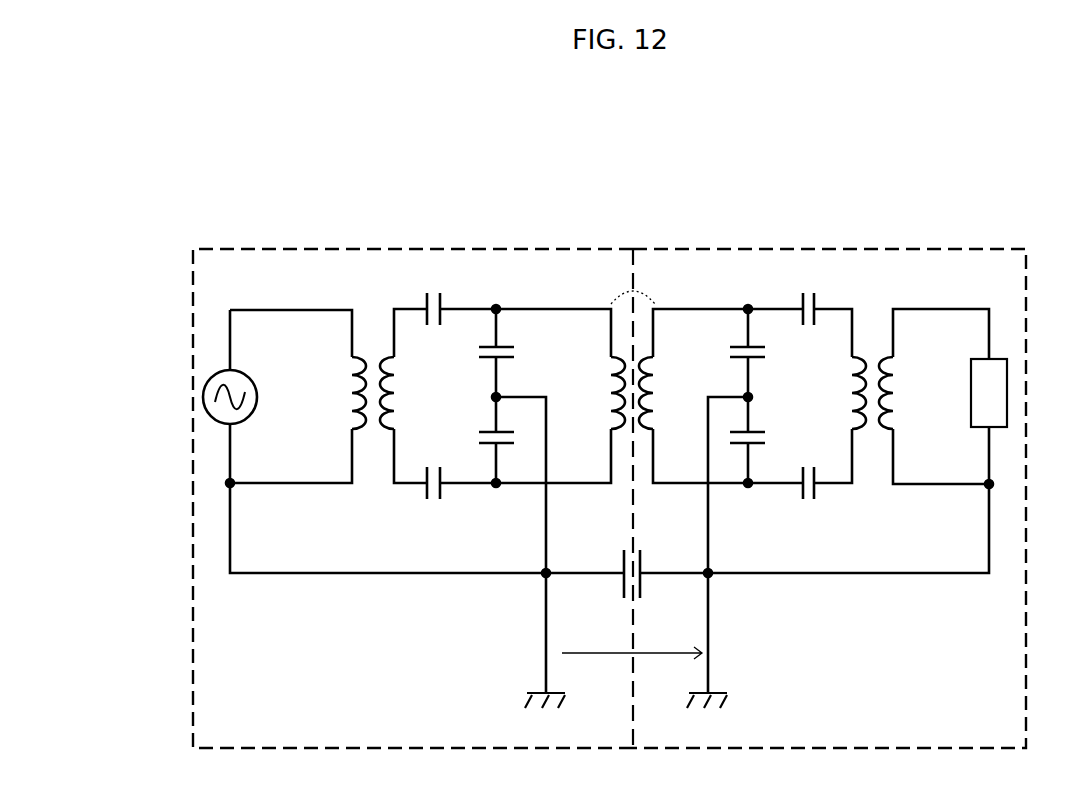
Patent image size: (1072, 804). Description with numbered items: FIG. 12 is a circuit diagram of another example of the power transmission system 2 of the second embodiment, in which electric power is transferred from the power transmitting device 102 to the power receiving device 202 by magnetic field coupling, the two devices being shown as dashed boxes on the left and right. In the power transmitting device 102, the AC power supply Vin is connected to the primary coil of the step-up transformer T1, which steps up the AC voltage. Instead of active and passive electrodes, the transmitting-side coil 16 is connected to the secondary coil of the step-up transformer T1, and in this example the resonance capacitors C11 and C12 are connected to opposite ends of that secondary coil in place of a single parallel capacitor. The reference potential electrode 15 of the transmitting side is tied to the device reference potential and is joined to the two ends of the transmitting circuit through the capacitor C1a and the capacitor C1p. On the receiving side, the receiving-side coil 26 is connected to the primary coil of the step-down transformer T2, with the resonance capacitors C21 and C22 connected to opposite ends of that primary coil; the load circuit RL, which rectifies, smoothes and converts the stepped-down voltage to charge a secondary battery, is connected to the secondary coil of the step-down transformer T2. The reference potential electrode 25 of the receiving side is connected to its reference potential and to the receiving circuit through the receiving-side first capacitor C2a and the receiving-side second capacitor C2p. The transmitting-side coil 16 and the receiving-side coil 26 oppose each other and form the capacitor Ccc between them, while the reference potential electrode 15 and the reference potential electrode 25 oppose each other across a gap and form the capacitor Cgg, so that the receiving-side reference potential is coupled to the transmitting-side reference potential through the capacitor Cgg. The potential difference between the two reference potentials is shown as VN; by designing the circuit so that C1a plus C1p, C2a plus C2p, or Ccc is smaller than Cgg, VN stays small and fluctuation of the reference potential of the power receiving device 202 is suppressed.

The power transmission system 2 is at (615, 442).
The power transmitting device 102 is at (200, 248).
The power receiving device 202 is at (1026, 248).
The step-up transformer T1 is at (365, 318).
The step-down transformer T2 is at (869, 318).
The AC power supply Vin is at (208, 385).
The load circuit RL is at (1008, 380).
The capacitor C11 is at (436, 322).
The capacitor C12 is at (436, 468).
The capacitor C1a is at (509, 344).
The capacitor C1p is at (510, 425).
The transmitting-side coil 16 is at (604, 386).
The receiving-side coil 26 is at (660, 385).
The capacitor C2a is at (733, 341).
The capacitor C2p is at (759, 427).
The capacitor C21 is at (806, 323).
The capacitor C22 is at (806, 468).
The capacitor Ccc is at (646, 284).
The capacitor Cgg is at (631, 592).
The reference potential electrode 15 is at (620, 594).
The reference potential electrode 25 is at (644, 594).
The reference potential difference VN is at (632, 668).